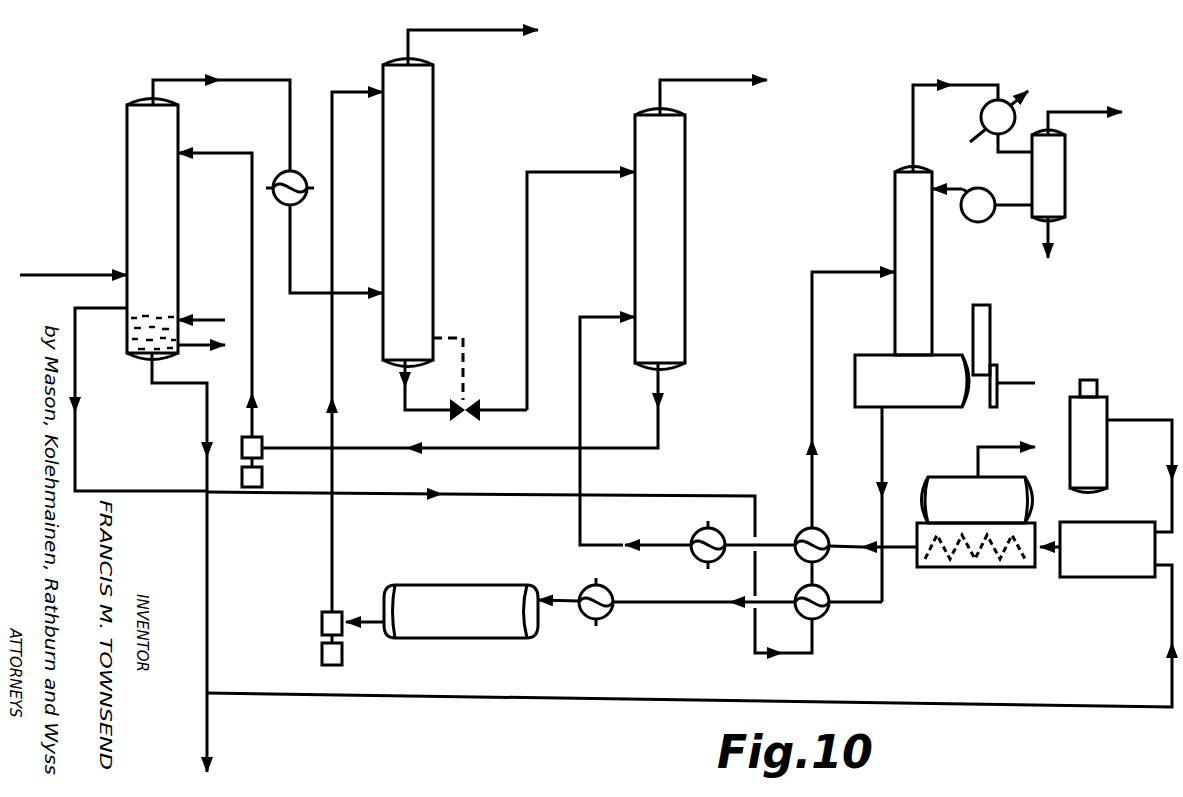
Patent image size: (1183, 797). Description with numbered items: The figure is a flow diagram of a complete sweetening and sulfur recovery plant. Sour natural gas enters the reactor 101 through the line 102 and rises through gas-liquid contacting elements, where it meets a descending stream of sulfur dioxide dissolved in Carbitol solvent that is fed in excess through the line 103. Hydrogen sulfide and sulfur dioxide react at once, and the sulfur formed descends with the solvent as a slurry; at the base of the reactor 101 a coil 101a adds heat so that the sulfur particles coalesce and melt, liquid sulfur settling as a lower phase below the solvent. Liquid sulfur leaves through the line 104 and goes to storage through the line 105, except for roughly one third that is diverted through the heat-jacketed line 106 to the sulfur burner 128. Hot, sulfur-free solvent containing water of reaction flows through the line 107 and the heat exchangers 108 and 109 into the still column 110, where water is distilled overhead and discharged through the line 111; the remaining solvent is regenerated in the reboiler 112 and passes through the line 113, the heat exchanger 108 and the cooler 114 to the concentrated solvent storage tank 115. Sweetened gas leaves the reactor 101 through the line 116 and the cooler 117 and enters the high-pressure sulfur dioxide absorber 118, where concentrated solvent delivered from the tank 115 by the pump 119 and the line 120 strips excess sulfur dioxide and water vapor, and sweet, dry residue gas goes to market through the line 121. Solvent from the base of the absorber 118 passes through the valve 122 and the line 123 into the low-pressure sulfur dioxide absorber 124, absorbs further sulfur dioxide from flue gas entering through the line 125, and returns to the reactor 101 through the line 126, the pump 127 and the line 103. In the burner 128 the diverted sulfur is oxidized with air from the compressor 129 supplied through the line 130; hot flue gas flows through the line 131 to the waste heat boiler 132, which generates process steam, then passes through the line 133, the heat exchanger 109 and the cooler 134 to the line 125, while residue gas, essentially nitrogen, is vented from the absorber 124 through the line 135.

The reactor 101 is at (180, 220).
The coil 101a is at (178, 320).
The line 102 is at (85, 270).
The line 103 is at (240, 133).
The line 104 is at (207, 418).
The line 105 is at (207, 712).
The line 106 is at (292, 670).
The line 107 is at (75, 432).
The heat exchanger 108 is at (823, 614).
The heat exchanger 109 is at (853, 400).
The still column 110 is at (932, 260).
The line 111 is at (1068, 112).
The reboiler 112 is at (907, 410).
The line 113 is at (882, 455).
The cooler 114 is at (607, 590).
The concentrated solvent storage tank 115 is at (478, 584).
The line 116 is at (195, 80).
The cooler 117 is at (318, 172).
The sulfur dioxide absorber 118 is at (433, 170).
The pump 119 is at (322, 623).
The line 120 is at (348, 205).
The line 121 is at (408, 41).
The valve 122 is at (448, 403).
The line 123 is at (528, 222).
The sulfur dioxide absorber 124 is at (685, 228).
The line 125 is at (580, 402).
The line 126 is at (532, 432).
The pump 127 is at (262, 440).
The sulfur burner 128 is at (1090, 578).
The compressor 129 is at (1107, 406).
The line 130 is at (1170, 448).
The line 131 is at (1052, 556).
The waste heat boiler 132 is at (938, 568).
The line 133 is at (817, 545).
The cooler 134 is at (690, 535).
The line 135 is at (660, 95).